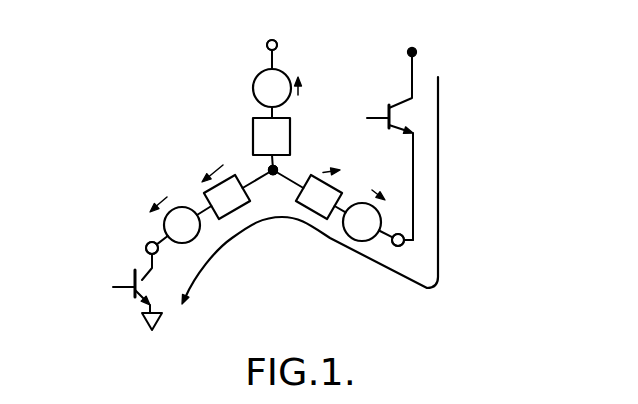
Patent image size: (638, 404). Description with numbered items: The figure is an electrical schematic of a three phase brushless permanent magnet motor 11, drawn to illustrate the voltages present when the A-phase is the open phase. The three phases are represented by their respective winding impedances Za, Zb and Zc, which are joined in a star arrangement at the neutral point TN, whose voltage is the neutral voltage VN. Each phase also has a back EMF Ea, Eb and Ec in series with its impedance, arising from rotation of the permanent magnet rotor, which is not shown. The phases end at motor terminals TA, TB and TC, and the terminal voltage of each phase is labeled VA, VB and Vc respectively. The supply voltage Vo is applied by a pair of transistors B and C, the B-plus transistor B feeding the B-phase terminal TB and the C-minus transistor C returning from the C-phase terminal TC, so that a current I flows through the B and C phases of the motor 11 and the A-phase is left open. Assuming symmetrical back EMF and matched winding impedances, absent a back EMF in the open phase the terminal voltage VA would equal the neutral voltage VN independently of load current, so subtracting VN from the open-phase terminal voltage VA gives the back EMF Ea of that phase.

The brushless permanent magnet motor 11 is at (150, 130).
The A-phase terminal TA is at (267, 43).
The A-phase terminal voltage VA is at (288, 40).
The A-phase back EMF Ea is at (285, 84).
The A-phase impedance Za is at (271, 144).
The neutral point TN is at (276, 168).
The neutral point voltage VN is at (278, 188).
The C-phase impedance Zc is at (235, 186).
The B-phase impedance Zb is at (312, 190).
The C-phase back EMF Ec is at (168, 215).
The B-phase back EMF Eb is at (370, 215).
The B-phase terminal TB is at (400, 233).
The B-phase terminal voltage VB is at (408, 256).
The C-phase terminal TC is at (147, 243).
The C-phase terminal voltage Vc is at (165, 256).
The C-minus transistor C is at (124, 292).
The B-plus transistor B is at (384, 148).
The supply voltage Vo is at (421, 40).
The phase current I is at (310, 190).